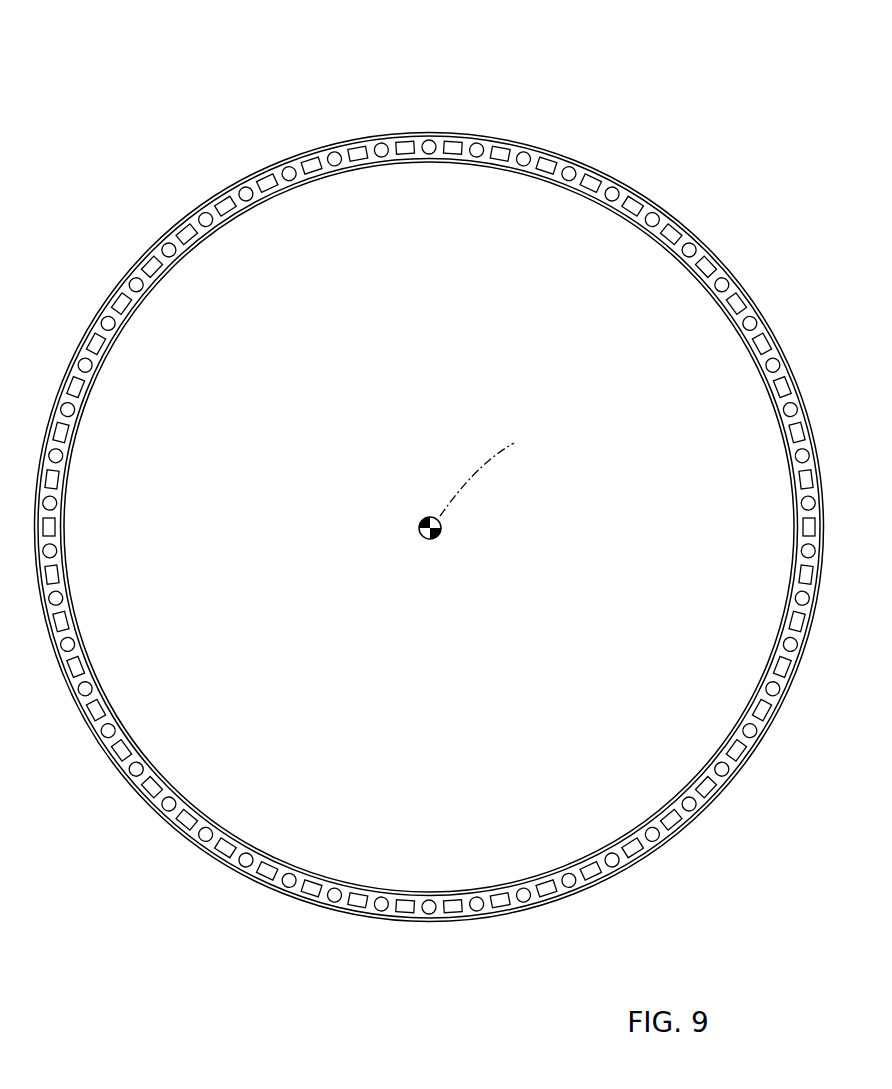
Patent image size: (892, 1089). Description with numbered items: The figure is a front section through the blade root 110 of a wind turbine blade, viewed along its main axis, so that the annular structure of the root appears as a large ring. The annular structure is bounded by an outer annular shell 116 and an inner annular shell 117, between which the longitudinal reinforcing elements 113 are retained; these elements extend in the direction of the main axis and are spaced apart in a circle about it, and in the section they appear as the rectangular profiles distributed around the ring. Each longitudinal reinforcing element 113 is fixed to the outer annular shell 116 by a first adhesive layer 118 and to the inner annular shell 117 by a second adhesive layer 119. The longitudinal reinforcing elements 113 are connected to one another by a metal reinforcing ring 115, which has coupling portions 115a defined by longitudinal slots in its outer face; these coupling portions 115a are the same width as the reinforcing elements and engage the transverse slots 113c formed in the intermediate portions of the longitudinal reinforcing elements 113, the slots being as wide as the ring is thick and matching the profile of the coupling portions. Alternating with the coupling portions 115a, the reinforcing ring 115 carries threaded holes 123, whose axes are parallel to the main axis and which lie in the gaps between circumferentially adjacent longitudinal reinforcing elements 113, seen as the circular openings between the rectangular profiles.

The blade root 110 is at (664, 99).
The longitudinal reinforcing elements 113 is at (148, 263).
The transverse slots 113c is at (133, 312).
The reinforcing ring 115 is at (160, 274).
The coupling portions 115a is at (178, 223).
The outer annular shell 116 is at (271, 889).
The inner annular shell 117 is at (625, 220).
The first adhesive layer 118 is at (307, 903).
The second adhesive layer 119 is at (707, 285).
The threaded holes 123 is at (81, 414).